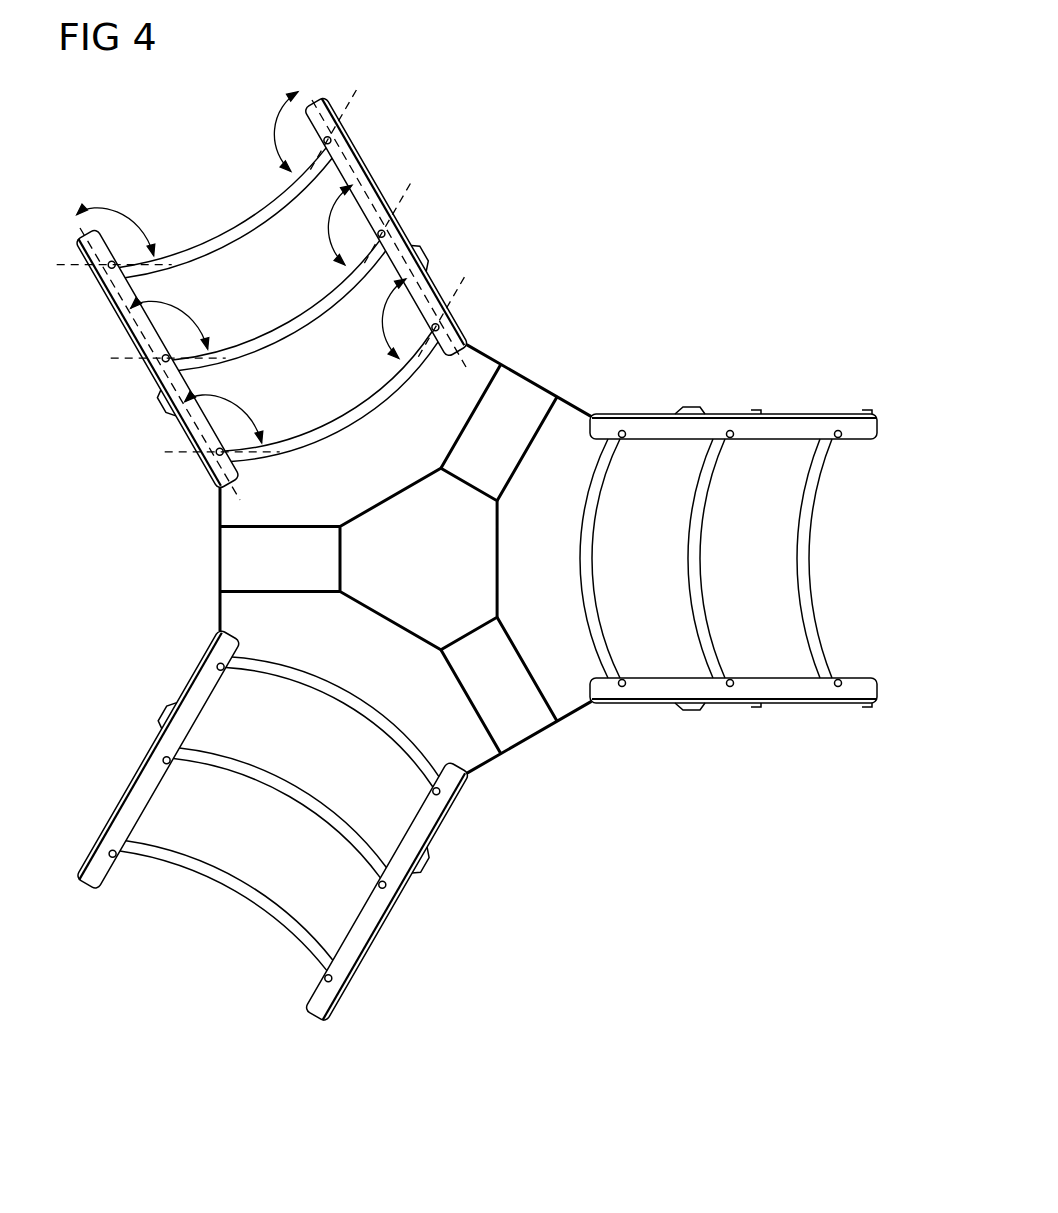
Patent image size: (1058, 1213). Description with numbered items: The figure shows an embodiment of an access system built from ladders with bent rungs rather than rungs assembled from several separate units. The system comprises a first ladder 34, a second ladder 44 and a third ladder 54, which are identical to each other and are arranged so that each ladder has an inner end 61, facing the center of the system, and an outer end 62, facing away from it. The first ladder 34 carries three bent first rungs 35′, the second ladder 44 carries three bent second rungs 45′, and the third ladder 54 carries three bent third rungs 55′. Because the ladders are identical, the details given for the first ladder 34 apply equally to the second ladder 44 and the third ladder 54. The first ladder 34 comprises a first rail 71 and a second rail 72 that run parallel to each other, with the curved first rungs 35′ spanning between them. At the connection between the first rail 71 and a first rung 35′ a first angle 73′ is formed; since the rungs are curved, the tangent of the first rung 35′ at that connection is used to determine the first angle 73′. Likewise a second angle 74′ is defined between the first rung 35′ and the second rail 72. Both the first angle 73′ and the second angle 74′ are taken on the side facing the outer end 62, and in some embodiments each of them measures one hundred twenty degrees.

The first ladder 34 is at (285, 294).
The bent first rung 35′ is at (214, 240).
The second ladder 44 is at (272, 838).
The bent second rung 45′ is at (365, 710).
The third ladder 54 is at (744, 558).
The bent third rung 55′ is at (590, 527).
The inner end 61 is at (358, 427).
The outer end 62 is at (174, 893).
The first rail 71 is at (213, 462).
The second rail 72 is at (455, 345).
The first angle 73′ is at (138, 212).
The second angle 74′ is at (275, 133).